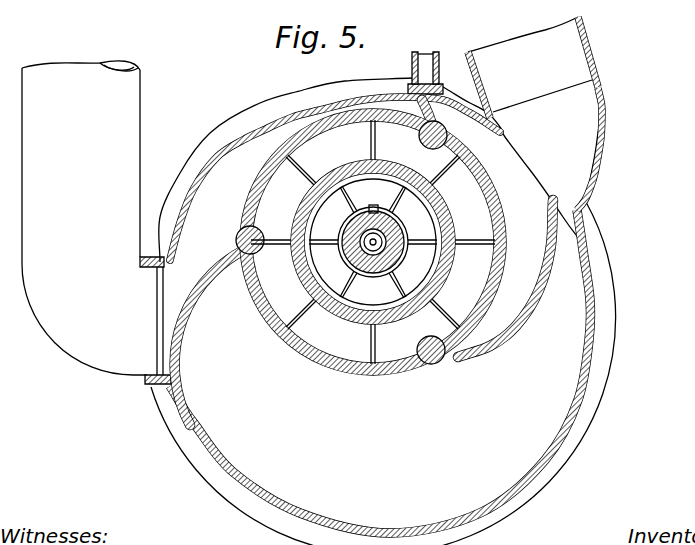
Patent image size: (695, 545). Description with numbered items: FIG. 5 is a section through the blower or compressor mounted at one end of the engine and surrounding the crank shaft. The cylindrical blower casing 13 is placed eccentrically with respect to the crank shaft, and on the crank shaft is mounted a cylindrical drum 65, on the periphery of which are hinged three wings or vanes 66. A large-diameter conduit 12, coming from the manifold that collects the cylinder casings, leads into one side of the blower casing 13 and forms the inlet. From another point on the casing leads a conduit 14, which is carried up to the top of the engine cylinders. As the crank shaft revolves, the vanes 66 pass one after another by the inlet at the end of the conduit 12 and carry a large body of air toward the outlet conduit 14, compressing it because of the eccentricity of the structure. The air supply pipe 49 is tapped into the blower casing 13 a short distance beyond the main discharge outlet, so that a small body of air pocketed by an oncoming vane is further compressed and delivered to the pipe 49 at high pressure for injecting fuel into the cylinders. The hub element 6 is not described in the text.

The shaft hub 6 is at (348, 258).
The conduit 12 is at (133, 121).
The blower casing 13 is at (203, 443).
The conduit 14 is at (578, 47).
The air supply pipe 49 is at (438, 53).
The cylindrical drum 65 is at (310, 353).
The wings or vanes 66 is at (291, 115).